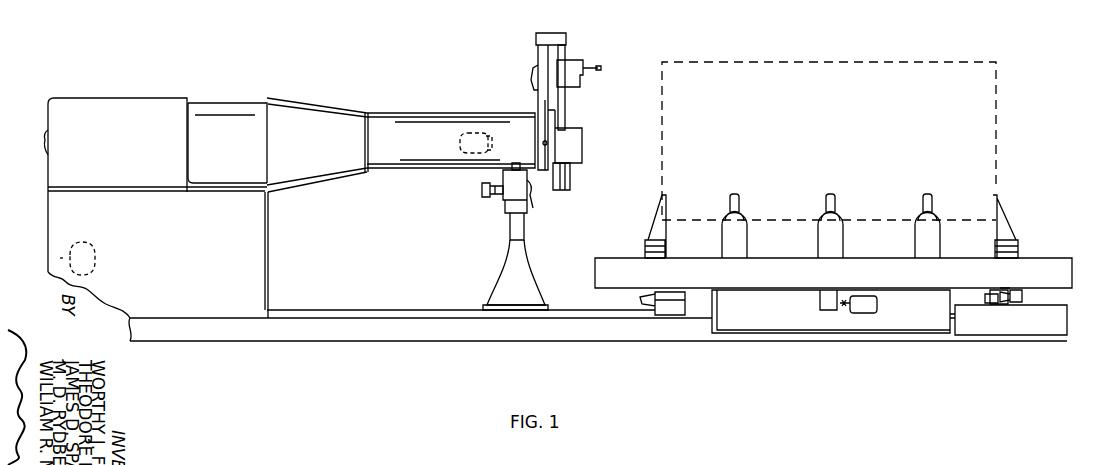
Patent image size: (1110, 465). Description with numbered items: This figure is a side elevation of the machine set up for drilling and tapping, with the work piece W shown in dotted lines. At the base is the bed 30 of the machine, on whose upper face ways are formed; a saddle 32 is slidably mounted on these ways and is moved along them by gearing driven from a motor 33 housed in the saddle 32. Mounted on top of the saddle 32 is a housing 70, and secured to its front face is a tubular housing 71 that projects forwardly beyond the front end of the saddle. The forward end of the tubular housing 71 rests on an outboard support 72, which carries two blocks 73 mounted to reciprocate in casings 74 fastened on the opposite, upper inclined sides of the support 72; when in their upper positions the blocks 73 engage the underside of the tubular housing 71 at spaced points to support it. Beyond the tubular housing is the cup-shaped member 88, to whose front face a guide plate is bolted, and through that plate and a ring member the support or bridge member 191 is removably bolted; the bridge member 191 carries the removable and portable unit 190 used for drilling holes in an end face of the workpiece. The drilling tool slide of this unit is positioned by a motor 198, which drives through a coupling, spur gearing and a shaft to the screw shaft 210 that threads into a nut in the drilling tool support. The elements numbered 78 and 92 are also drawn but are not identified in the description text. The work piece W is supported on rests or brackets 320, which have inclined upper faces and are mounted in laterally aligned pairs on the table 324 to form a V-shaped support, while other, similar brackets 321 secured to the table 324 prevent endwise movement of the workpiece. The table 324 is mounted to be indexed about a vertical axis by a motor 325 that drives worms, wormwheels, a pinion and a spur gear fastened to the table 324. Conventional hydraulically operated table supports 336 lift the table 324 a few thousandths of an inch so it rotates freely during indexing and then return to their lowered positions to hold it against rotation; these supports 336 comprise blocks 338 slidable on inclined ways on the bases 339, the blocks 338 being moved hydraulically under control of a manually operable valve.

The bed 30 is at (444, 336).
The saddle 32 is at (267, 265).
The motor 33 is at (48, 248).
The housing 70 is at (162, 97).
The tubular housing 71 is at (400, 112).
The outboard support 72 is at (532, 262).
The blocks 73 is at (516, 163).
The casings 74 is at (533, 208).
The adjusting knob 78 is at (488, 198).
The cup-shaped member 88 is at (545, 113).
The slide 92 is at (572, 176).
The removable and portable unit 190 is at (590, 55).
The support or bridge member 191 is at (538, 50).
The motor 198 is at (531, 72).
The screw shaft 210 is at (570, 45).
The rests or brackets 320 is at (915, 232).
The brackets 321 is at (650, 228).
The table 324 is at (1053, 258).
The motor 325 is at (877, 308).
The table supports 336 is at (670, 318).
The blocks 338 is at (1010, 290).
The bases 339 is at (985, 298).
The work piece W is at (945, 60).